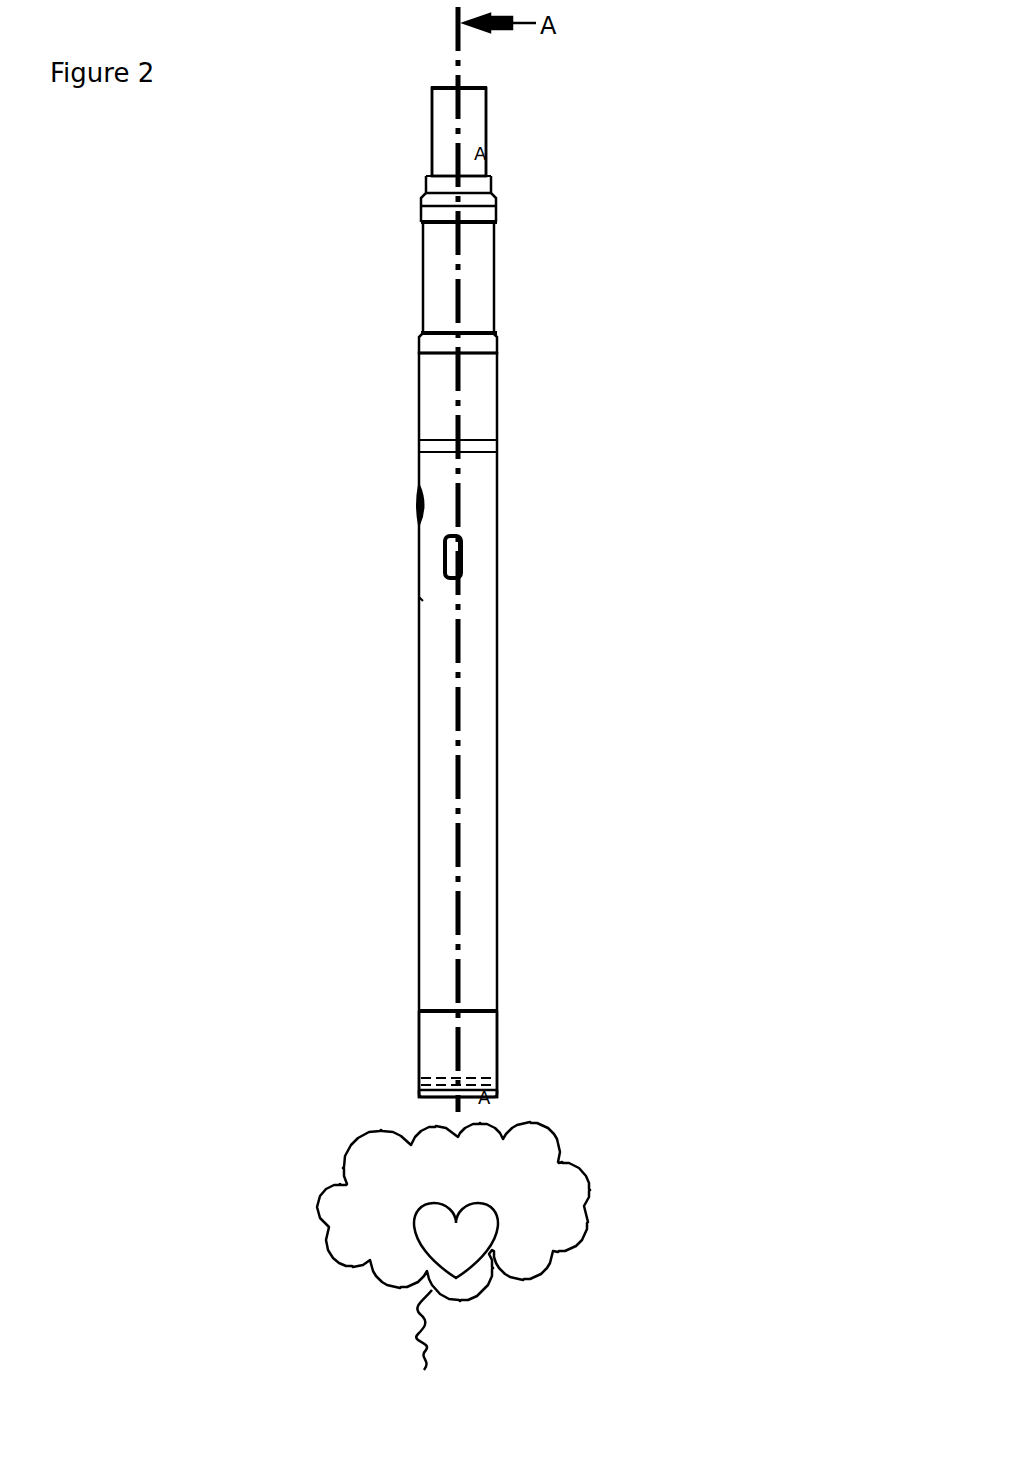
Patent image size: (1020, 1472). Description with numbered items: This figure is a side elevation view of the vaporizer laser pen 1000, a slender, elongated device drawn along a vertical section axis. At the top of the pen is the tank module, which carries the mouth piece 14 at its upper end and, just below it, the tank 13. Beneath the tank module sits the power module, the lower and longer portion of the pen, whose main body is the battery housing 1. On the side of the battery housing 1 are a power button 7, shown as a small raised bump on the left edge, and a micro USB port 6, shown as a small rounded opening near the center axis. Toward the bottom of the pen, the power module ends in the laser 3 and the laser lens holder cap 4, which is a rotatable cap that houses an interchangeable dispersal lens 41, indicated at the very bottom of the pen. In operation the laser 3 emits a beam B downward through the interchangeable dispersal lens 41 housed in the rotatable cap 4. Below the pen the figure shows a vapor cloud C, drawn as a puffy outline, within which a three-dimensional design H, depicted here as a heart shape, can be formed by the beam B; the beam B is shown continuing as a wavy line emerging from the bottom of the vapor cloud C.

The vaporizer laser pen 1000 is at (566, 421).
The battery housing 1 is at (436, 698).
The tank 13 is at (447, 148).
The mouth piece 14 is at (487, 107).
The power button 7 is at (415, 502).
The micro USB port 6 is at (462, 558).
The laser 3 is at (518, 1022).
The laser lens holder cap 4 is at (420, 1050).
The interchangeable dispersal lens 41 is at (480, 1080).
The vapor cloud C is at (328, 1208).
The 3D design H is at (495, 1220).
The beam B is at (438, 1340).